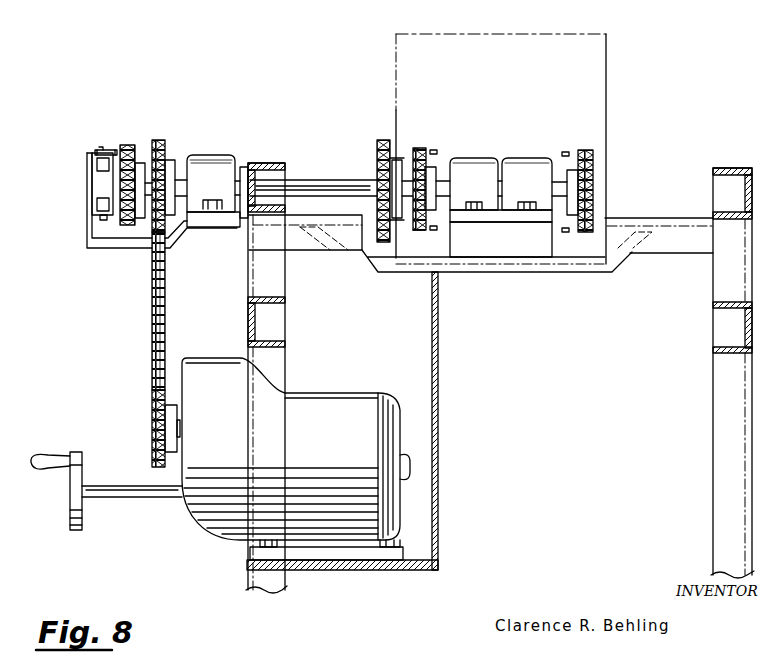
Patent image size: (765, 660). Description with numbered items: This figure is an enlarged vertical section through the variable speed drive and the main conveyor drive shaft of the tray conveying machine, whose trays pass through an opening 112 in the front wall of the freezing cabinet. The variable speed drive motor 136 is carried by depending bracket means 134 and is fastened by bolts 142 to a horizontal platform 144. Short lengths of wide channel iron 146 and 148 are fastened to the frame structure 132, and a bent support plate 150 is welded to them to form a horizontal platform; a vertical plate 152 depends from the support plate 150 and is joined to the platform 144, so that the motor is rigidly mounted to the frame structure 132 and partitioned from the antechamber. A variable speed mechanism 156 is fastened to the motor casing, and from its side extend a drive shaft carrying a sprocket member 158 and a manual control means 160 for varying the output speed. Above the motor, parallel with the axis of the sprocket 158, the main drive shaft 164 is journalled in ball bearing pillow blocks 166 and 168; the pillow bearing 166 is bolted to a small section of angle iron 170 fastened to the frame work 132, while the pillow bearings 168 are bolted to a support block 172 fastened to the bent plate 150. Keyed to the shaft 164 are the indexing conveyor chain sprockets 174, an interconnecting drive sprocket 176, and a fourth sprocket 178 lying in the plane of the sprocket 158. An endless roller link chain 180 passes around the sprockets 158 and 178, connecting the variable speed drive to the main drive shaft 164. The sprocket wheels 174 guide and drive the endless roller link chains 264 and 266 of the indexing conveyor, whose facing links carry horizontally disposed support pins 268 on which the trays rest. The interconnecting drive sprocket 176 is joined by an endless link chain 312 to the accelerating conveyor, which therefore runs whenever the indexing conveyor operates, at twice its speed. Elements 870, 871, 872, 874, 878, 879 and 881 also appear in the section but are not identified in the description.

The opening 112 is at (523, 42).
The frame structure 132 is at (275, 163).
The depending bracket means 134 is at (438, 509).
The variable speed drive motor 136 is at (260, 546).
The bolts 142 is at (262, 560).
The horizontal platform 144 is at (310, 571).
The channel iron 146 is at (326, 252).
The channel iron 148 is at (690, 255).
The bent support plate 150 is at (598, 273).
The vertical plate 152 is at (439, 376).
The variable speed mechanism 156 is at (188, 522).
The sprocket member 158 is at (166, 452).
The manual control means 160 is at (70, 501).
The main drive shaft 164 is at (345, 178).
The pillow block bearing 166 is at (214, 155).
The pillow block bearings 168 is at (522, 156).
The angle iron 170 is at (244, 167).
The support block 172 is at (555, 258).
The indexing conveyor chain sprockets 174 is at (433, 167).
The interconnecting drive sprocket 176 is at (398, 158).
The fourth sprocket 178 is at (160, 141).
The endless roller link chain 180 is at (151, 356).
The endless roller link chain 264 is at (586, 149).
The endless roller link chain 266 is at (420, 228).
The support pins 268 is at (434, 149).
The endless link chain 312 is at (383, 141).
The pin 870 is at (95, 152).
The bearing block 871 is at (92, 156).
The housing bracket 872 is at (96, 249).
The pin retainer 874 is at (99, 150).
The sprocket 878 is at (127, 145).
The hub 879 is at (140, 163).
The set screw 881 is at (103, 148).